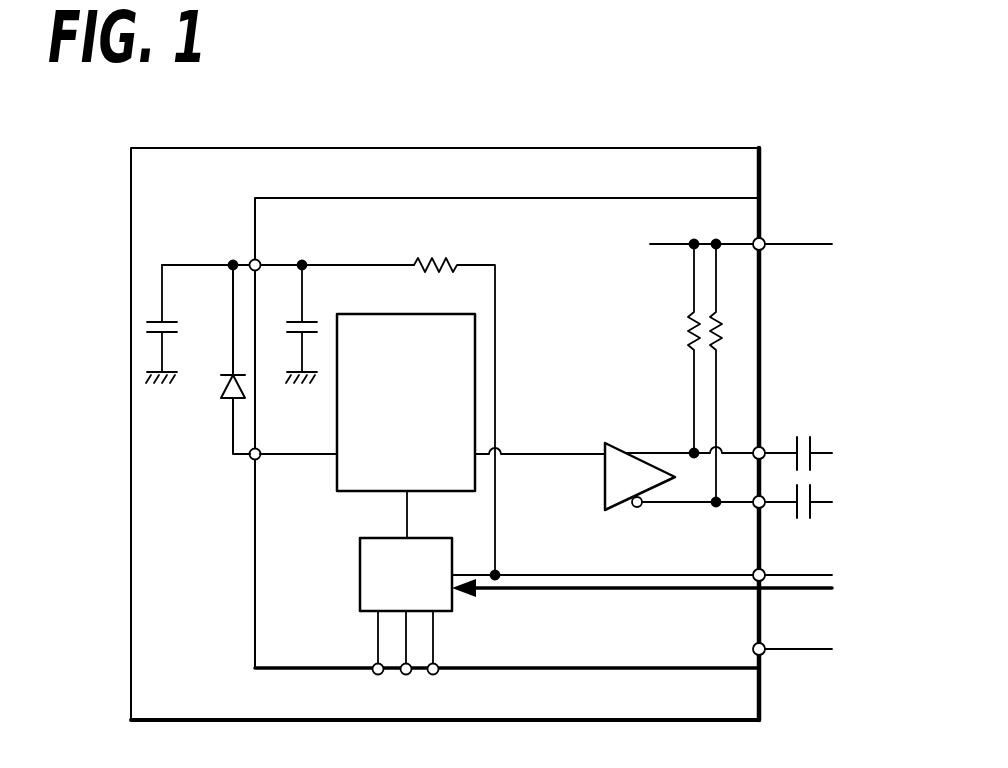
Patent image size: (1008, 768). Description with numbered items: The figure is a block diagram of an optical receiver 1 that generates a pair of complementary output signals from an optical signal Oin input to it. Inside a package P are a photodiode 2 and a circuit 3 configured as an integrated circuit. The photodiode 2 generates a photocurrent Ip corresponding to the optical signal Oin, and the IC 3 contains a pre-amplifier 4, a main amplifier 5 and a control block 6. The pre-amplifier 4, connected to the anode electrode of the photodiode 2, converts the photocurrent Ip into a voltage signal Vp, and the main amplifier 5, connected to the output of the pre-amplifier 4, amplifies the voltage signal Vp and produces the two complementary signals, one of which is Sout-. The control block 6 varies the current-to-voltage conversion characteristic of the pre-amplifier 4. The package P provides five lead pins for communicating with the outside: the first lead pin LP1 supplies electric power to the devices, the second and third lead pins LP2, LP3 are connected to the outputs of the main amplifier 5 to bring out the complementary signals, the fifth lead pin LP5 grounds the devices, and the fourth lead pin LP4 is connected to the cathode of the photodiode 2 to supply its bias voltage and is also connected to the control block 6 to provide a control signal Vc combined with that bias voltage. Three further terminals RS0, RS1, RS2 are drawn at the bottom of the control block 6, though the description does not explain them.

The optical receiver 1 is at (474, 411).
The photodiode 2 is at (222, 386).
The circuit 3 is at (255, 597).
The pre-amplifier 4 is at (356, 492).
The main amplifier 5 is at (616, 510).
The control block 6 is at (360, 591).
The package P is at (131, 455).
The optical signal Oin is at (204, 330).
The photocurrent Ip is at (194, 434).
The voltage signal Vp is at (537, 443).
The control signal Vc is at (597, 590).
The first lead pin LP1 is at (762, 240).
The second lead pin LP2 is at (764, 446).
The third lead pin LP3 is at (765, 500).
The fourth lead pin LP4 is at (765, 582).
The fifth lead pin LP5 is at (765, 656).
The output signal Sout- is at (806, 538).
The setting terminal 0 RS0 is at (374, 675).
The setting terminal 1 RS1 is at (408, 676).
The setting terminal 2 RS2 is at (437, 675).